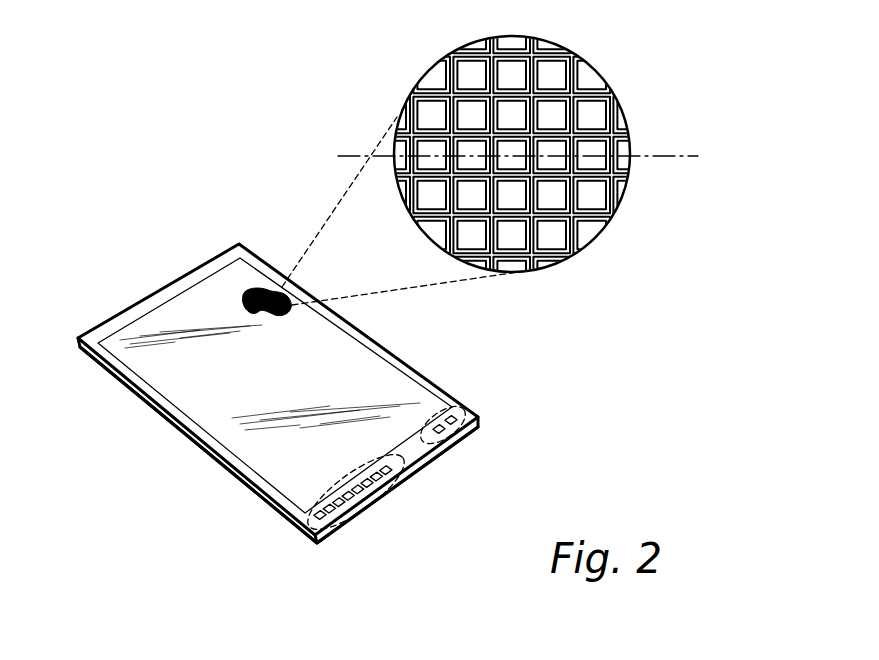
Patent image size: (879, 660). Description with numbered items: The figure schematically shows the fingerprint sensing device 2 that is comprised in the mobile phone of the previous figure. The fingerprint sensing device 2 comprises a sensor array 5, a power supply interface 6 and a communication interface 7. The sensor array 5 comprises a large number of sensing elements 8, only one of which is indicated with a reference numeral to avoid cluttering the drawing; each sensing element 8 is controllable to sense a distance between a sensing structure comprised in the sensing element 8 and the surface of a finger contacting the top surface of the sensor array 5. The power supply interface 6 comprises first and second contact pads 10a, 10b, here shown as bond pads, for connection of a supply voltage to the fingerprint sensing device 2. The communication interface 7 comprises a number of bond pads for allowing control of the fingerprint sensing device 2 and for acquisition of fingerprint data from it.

The fingerprint sensing device 2 is at (258, 200).
The sensor array 5 is at (372, 378).
The power supply interface 6 is at (465, 438).
The communication interface 7 is at (377, 517).
The sensing element 8 is at (622, 158).
The first contact pad 10a is at (438, 433).
The second contact pad 10b is at (457, 413).